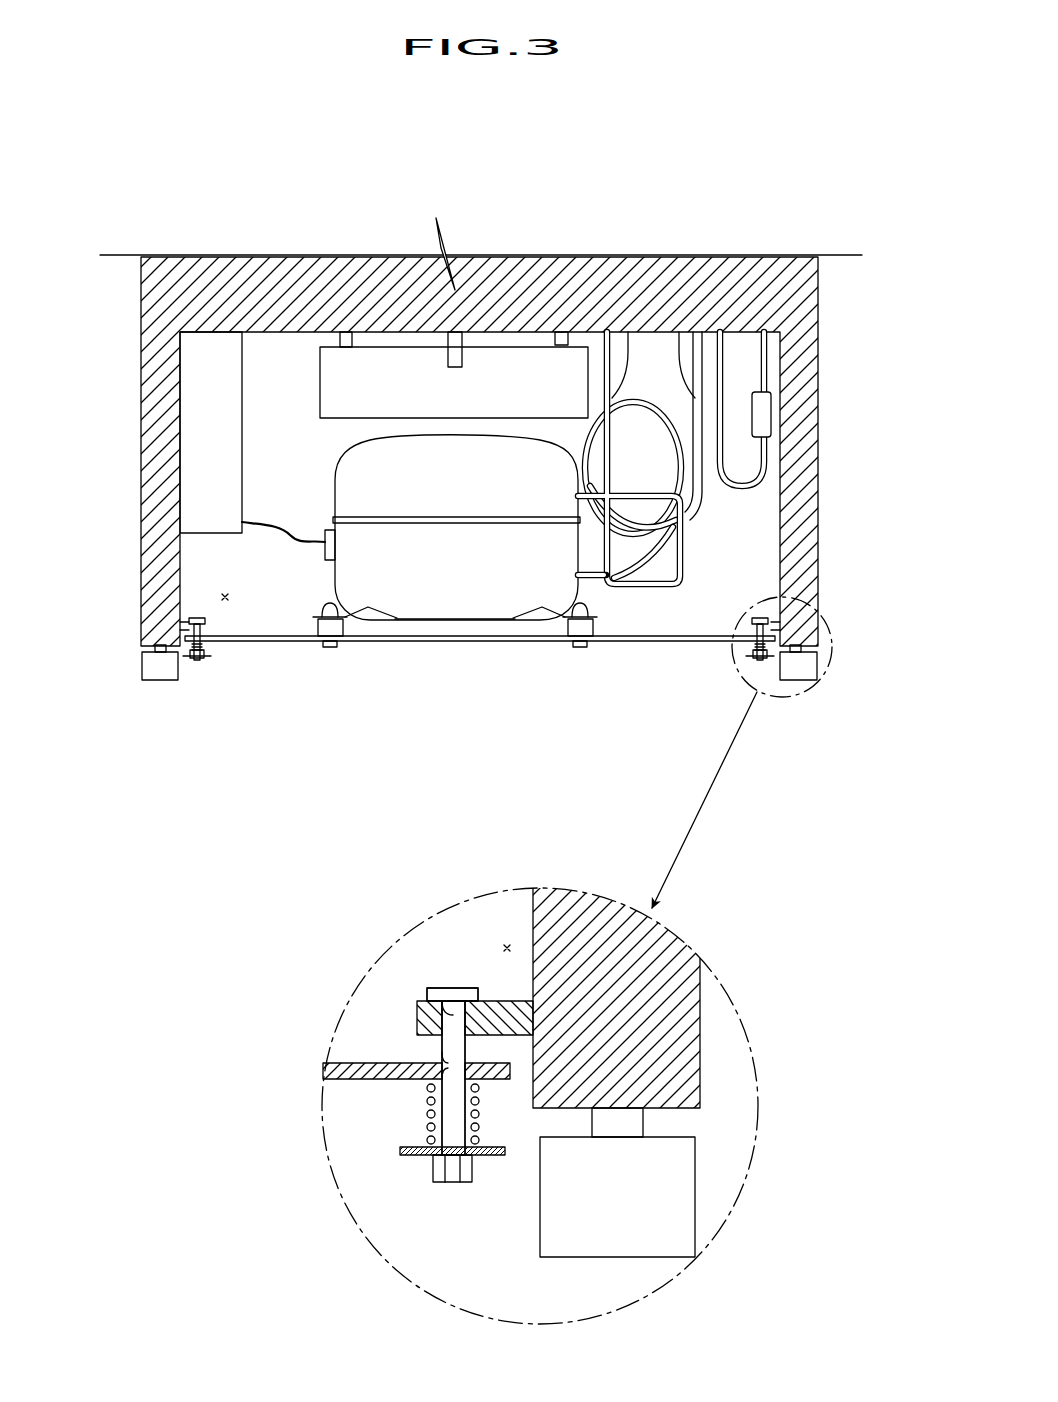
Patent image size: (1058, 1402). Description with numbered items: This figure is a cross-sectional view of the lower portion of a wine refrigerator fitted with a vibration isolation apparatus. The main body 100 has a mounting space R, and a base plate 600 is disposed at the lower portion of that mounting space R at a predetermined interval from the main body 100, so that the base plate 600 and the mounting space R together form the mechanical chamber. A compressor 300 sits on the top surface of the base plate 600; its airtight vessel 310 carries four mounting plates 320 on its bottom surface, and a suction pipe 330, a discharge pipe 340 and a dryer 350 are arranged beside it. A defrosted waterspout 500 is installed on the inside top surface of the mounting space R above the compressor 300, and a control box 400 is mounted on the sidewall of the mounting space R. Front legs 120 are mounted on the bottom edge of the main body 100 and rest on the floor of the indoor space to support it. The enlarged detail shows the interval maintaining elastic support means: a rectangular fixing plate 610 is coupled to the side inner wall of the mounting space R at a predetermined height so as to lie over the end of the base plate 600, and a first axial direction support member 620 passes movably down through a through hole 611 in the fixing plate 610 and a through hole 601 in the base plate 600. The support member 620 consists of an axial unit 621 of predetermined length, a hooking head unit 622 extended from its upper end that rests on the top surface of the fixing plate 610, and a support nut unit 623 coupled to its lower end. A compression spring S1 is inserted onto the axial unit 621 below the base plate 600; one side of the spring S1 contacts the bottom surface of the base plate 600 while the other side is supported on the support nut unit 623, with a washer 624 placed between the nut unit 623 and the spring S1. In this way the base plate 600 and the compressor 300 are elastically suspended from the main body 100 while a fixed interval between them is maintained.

The main body 100 is at (828, 380).
The front legs 120 is at (140, 684).
The compressor 300 is at (330, 497).
The airtight vessel 310 is at (432, 622).
The mounting plates 320 is at (367, 642).
The suction pipe 330 is at (680, 372).
The discharge pipe 340 is at (622, 372).
The dryer 350 is at (770, 428).
The control box 400 is at (250, 382).
The defrosted waterspout 500 is at (305, 392).
The base plate 600 is at (255, 645).
The through holes 601 is at (443, 1052).
The fixing plates 610 is at (412, 998).
The through holes 611 is at (450, 998).
The first axial direction support members 620 is at (459, 974).
The axial unit 621 is at (450, 1133).
The hooking head unit 622 is at (447, 1000).
The support nut unit 623 is at (433, 1170).
The washers 624 is at (407, 1150).
The mounting space R is at (222, 596).
The springs S1 is at (418, 1107).